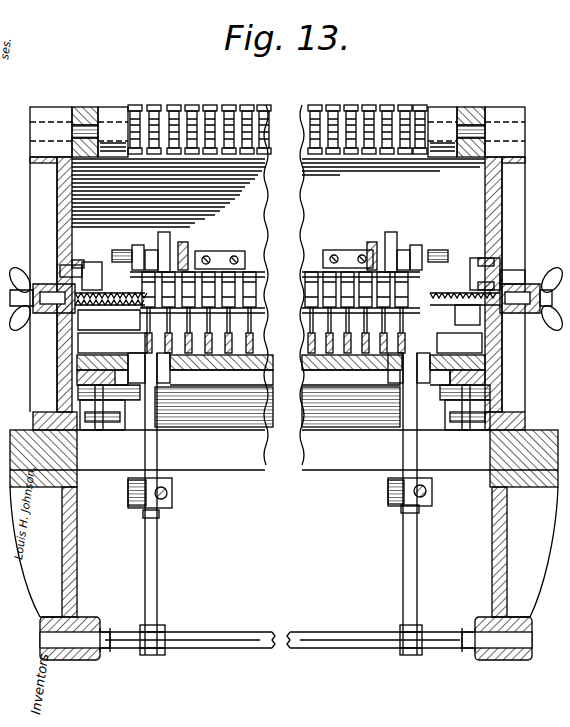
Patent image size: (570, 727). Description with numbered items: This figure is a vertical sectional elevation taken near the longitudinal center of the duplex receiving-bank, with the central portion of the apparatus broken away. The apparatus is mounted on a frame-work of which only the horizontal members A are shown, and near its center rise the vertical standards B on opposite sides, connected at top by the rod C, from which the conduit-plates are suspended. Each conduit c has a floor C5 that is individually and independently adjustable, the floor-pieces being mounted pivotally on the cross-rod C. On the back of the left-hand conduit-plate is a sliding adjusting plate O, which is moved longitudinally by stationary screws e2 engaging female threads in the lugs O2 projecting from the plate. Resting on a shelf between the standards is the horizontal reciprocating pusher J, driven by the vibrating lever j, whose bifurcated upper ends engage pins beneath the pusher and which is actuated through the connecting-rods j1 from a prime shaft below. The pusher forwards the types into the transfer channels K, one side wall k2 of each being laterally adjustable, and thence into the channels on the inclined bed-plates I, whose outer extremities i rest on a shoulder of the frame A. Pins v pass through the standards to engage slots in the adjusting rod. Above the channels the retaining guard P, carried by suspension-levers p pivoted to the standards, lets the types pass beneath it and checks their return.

The vertical standard B is at (277, 268).
The conduit floor C5 is at (277, 120).
The conduit c is at (273, 127).
The horizontal frame member A is at (284, 545).
The transfer channel K is at (287, 367).
The reciprocating pusher J is at (280, 343).
The vibrating lever j is at (279, 504).
The connecting-rod j1 is at (289, 493).
The cross-rod C is at (280, 349).
The adjusting plate O is at (275, 265).
The lug O2 is at (392, 258).
The stationary screw e2 is at (284, 253).
The type latch or retaining guard P is at (111, 311).
The bed-plate I is at (558, 294).
The pin v is at (285, 295).
The suspension-lever p is at (476, 258).
The movable side wall k2 is at (490, 275).
The outer extremity of bed-plate i is at (284, 407).